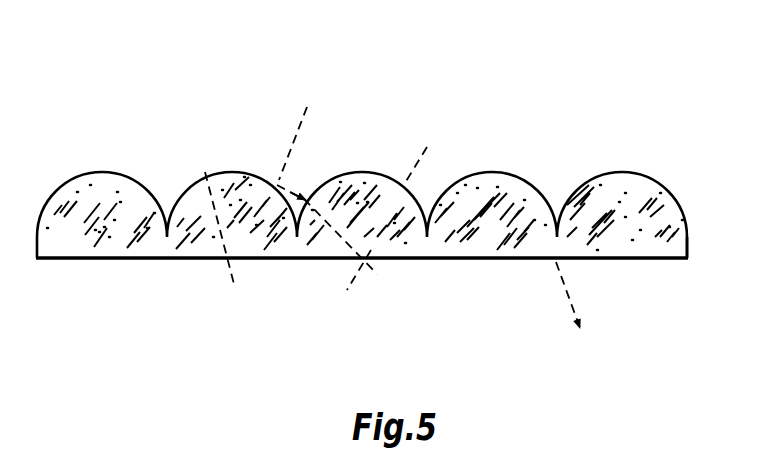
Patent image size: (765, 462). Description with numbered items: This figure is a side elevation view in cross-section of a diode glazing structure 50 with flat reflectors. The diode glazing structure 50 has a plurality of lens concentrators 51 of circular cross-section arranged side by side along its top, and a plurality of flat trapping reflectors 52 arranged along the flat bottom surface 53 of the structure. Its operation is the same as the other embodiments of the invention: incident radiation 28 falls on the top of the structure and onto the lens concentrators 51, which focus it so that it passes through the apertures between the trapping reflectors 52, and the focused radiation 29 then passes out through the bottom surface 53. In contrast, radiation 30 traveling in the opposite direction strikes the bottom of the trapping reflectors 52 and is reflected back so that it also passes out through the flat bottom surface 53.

The incident radiation 28 is at (277, 182).
The focused radiation 29 is at (239, 300).
The radiation in the opposite direction 30 is at (552, 268).
The diode glazing structure 50 is at (370, 177).
The lens concentrators 51 is at (186, 194).
The flat trapping reflectors 52 is at (143, 260).
The flat bottom surface 53 is at (648, 263).